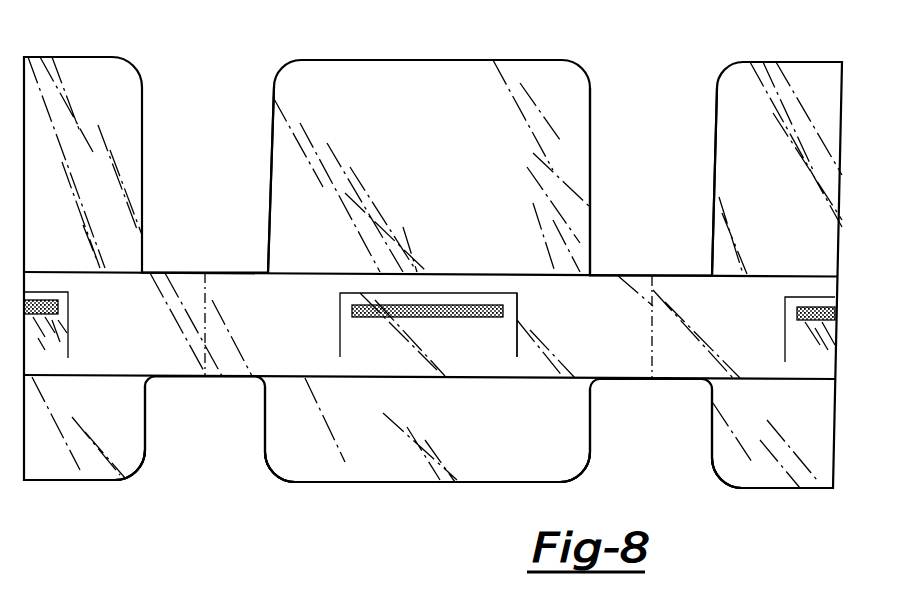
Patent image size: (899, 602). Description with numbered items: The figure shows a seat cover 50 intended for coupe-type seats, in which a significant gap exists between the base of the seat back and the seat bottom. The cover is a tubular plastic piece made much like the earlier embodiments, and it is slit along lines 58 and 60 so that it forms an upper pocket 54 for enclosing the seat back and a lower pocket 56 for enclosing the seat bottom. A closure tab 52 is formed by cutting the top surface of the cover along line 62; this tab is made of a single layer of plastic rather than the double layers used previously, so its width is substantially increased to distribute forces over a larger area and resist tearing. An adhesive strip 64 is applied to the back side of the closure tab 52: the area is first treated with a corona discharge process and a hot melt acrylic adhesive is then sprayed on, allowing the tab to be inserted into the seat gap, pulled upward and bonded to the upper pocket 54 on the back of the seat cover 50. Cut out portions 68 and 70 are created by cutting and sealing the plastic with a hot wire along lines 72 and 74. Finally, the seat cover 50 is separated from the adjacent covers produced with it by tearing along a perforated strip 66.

The seat cover 50 is at (98, 57).
The closure tab 52 is at (360, 330).
The upper pocket 54 is at (545, 70).
The lower pocket 56 is at (475, 472).
The slit line 58 is at (297, 273).
The slit line 60 is at (388, 377).
The cut line 62 is at (518, 312).
The adhesive strip 64 is at (453, 305).
The perforated strip 66 is at (205, 347).
The cut out portion 68 is at (196, 425).
The cut out portion 70 is at (248, 88).
The hot-wire cut line 72 is at (274, 143).
The hot-wire cut line 74 is at (145, 422).